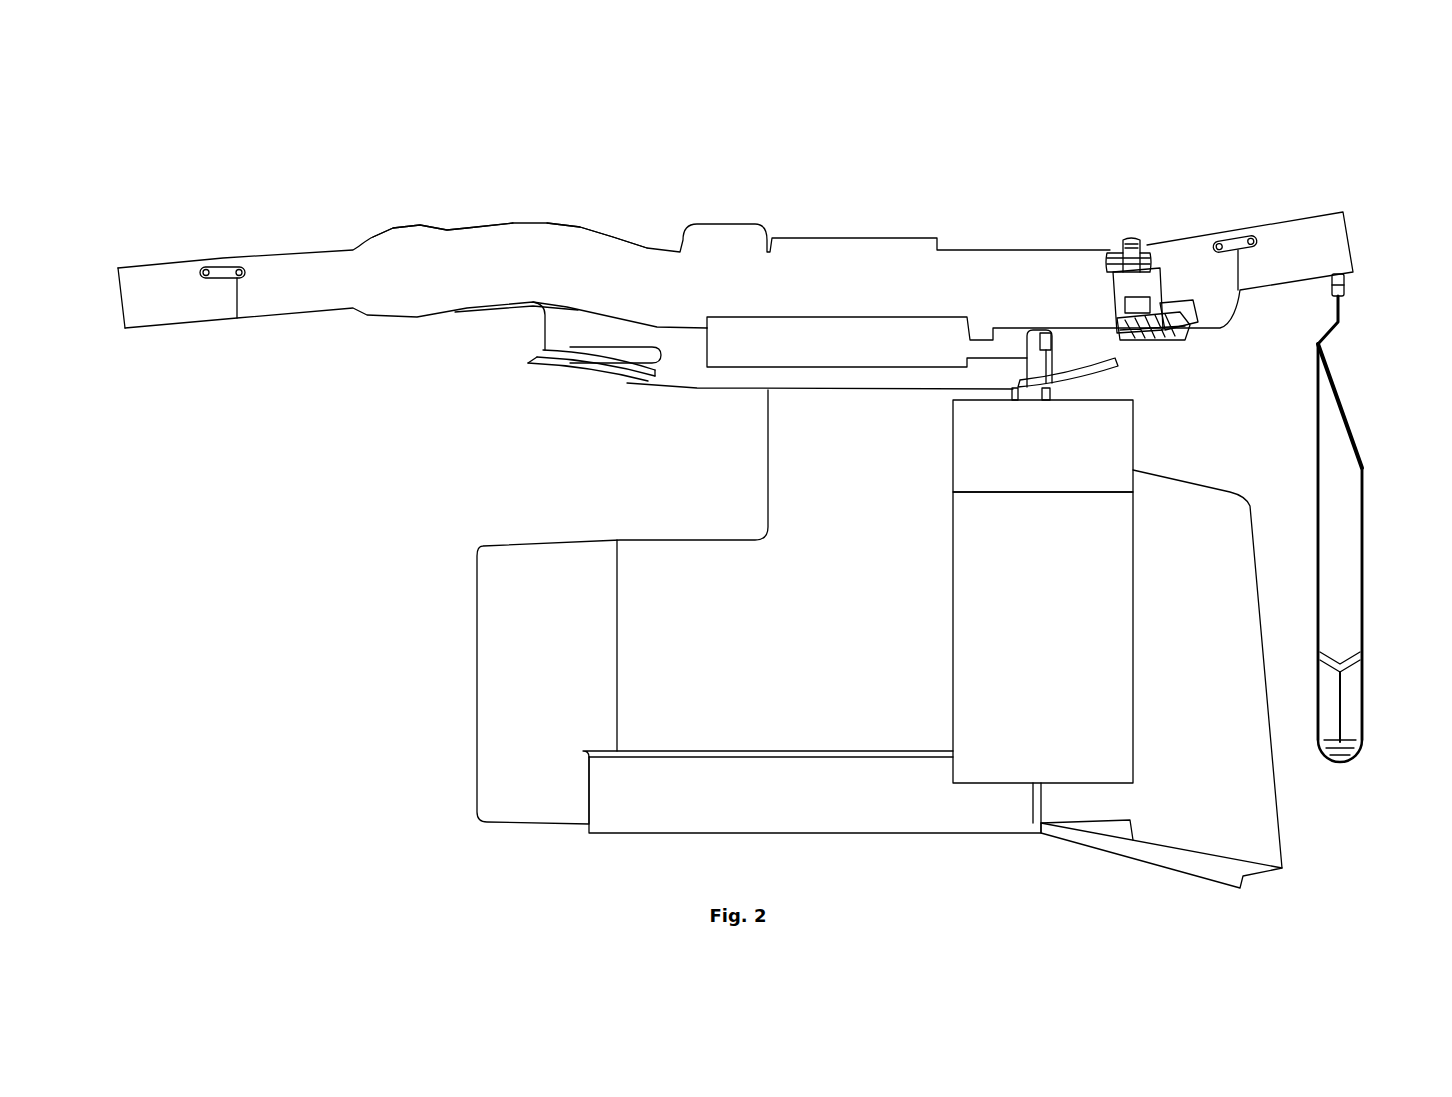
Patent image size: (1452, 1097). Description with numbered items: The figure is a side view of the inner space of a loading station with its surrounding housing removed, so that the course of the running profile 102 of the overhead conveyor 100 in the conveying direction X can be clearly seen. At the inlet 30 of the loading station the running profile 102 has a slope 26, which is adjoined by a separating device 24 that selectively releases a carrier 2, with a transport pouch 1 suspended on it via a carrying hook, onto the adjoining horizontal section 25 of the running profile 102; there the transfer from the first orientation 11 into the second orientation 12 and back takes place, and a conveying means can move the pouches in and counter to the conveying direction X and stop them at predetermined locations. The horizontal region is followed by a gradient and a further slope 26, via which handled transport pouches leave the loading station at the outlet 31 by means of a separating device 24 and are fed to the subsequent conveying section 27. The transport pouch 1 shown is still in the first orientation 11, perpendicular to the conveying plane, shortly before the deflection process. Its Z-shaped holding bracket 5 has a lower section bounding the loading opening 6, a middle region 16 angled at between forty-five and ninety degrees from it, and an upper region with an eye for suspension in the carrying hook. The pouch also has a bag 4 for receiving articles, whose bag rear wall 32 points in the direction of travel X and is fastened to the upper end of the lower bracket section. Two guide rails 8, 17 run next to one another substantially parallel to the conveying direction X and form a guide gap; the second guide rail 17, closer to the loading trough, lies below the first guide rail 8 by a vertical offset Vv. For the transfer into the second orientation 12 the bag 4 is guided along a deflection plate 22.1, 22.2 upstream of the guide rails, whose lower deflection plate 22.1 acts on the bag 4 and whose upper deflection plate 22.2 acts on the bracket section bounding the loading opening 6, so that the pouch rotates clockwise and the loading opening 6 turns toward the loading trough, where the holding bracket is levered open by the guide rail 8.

The transport pouch 1 is at (913, 590).
The carrier 2 is at (1148, 351).
The bag 4 is at (1373, 710).
The holding bracket 5 is at (1353, 306).
The loading opening 6 is at (955, 452).
The first guide rail 8 is at (527, 345).
The first orientation 11 is at (1358, 762).
The second orientation 12 is at (958, 660).
The middle region 16 is at (1336, 316).
The second guide rail 17 is at (532, 364).
The lower deflection plate 22.1 is at (1233, 822).
The upper deflection plate 22.2 is at (1204, 508).
The separating device 24 is at (1128, 228).
The rail 25 is at (613, 228).
The slope 26 is at (480, 218).
The subsequent conveying section 27 is at (212, 250).
The inlet 30 is at (1408, 821).
The outlet 31 is at (205, 540).
The bag rear wall 32 is at (1320, 536).
The overhead conveyor 100 is at (1288, 142).
The running profile 102 is at (137, 343).
The conveying direction X is at (868, 174).
The vertical offset Vv is at (626, 383).